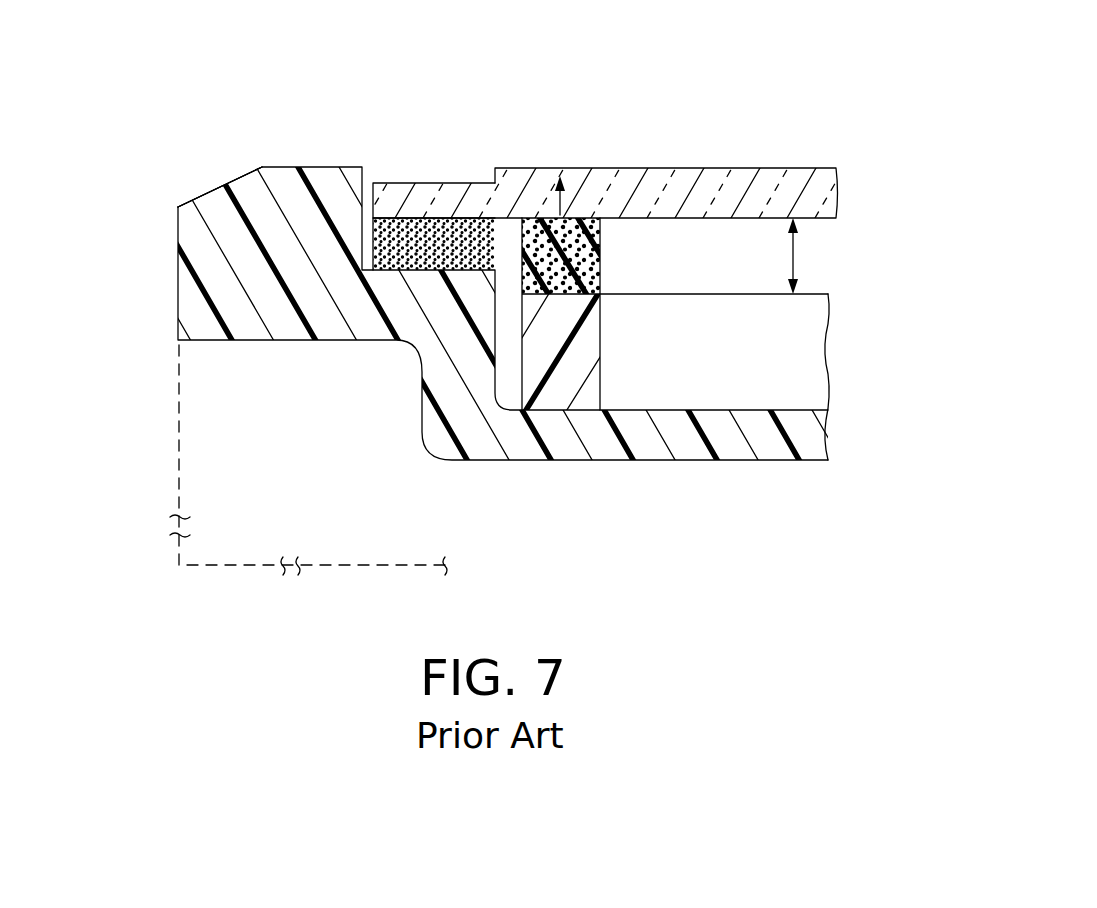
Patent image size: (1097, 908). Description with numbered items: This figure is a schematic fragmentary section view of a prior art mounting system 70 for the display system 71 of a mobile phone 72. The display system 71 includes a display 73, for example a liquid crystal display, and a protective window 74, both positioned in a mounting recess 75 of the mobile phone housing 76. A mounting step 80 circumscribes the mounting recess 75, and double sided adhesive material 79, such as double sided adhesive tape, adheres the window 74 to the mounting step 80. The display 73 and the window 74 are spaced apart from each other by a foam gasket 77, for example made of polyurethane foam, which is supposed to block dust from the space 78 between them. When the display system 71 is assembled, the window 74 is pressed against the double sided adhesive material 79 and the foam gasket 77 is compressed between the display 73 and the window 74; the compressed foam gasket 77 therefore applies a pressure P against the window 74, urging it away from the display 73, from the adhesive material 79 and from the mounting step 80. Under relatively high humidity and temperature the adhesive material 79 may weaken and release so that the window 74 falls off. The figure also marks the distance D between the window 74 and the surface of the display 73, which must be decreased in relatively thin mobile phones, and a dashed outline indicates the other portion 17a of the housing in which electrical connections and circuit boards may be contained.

The prior art mounting system 70 is at (265, 116).
The display system 71 is at (697, 137).
The mobile phone 72 is at (166, 125).
The display 73 is at (802, 345).
The protective window 74 is at (822, 190).
The mounting recess 75 is at (426, 118).
The mobile phone housing 76 is at (192, 196).
The foam gasket 77 is at (590, 217).
The space 78 is at (752, 234).
The double sided adhesive material 79 is at (403, 232).
The mounting step 80 is at (427, 270).
The other portion of the display housing 17a is at (178, 420).
The pressure P is at (558, 200).
The distance D is at (808, 256).